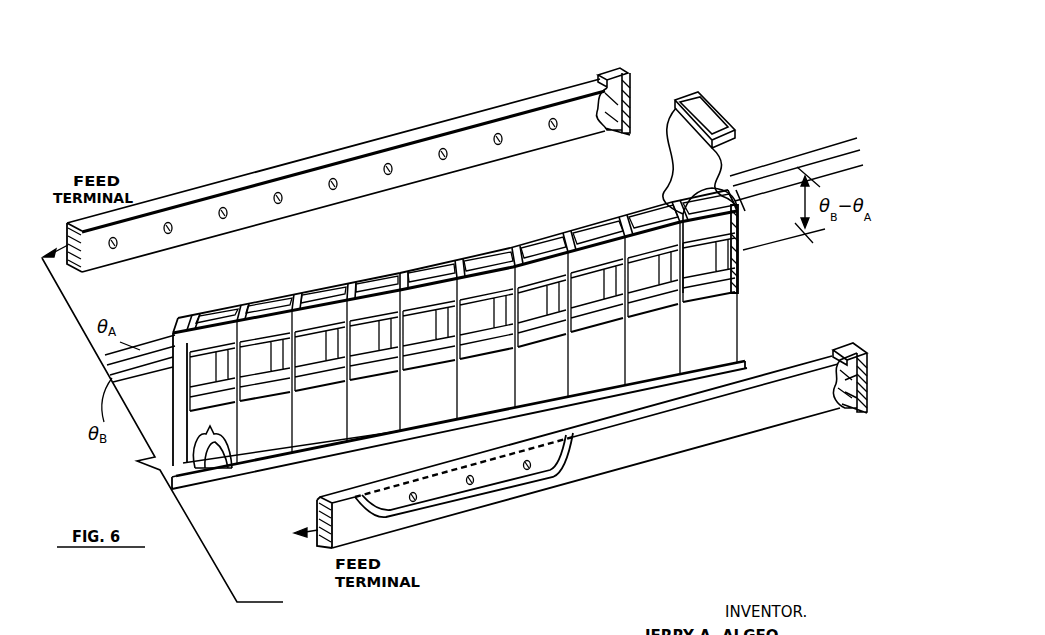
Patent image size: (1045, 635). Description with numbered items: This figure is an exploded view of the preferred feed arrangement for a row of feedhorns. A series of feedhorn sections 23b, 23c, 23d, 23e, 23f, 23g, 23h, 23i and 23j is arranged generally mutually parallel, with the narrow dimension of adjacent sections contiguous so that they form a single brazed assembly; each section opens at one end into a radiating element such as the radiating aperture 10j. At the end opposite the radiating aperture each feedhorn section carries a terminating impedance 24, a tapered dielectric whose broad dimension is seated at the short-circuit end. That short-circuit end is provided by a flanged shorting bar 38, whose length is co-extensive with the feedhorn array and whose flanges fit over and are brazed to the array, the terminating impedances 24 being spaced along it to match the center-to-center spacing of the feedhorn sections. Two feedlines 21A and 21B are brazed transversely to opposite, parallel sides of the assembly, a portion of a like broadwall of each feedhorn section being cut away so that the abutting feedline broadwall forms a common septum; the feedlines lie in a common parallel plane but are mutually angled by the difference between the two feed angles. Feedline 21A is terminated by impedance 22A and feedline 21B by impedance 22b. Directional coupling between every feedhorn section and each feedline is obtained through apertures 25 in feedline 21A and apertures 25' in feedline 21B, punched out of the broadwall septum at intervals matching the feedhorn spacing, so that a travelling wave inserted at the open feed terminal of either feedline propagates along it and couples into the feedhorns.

The feedline 21A is at (517, 106).
The terminating impedance 22A is at (632, 110).
The radiating element 10j is at (700, 113).
The directional coupler aperture 25 is at (333, 209).
The feedhorn section 23b is at (280, 440).
The feedhorn section 23c is at (333, 422).
The feedhorn section 23d is at (390, 425).
The feedhorn section 23e is at (447, 407).
The feedhorn section 23f is at (493, 397).
The feedhorn section 23g is at (553, 384).
The feedhorn section 23h is at (610, 377).
The feedhorn section 23i is at (658, 365).
The feedhorn section 23j is at (717, 366).
The terminating impedance 24 is at (203, 466).
The flanged shorting bar 38 is at (292, 462).
The feedline 21B is at (617, 456).
The terminating impedance 22b is at (845, 407).
The directional coupler aperture 25' is at (470, 481).